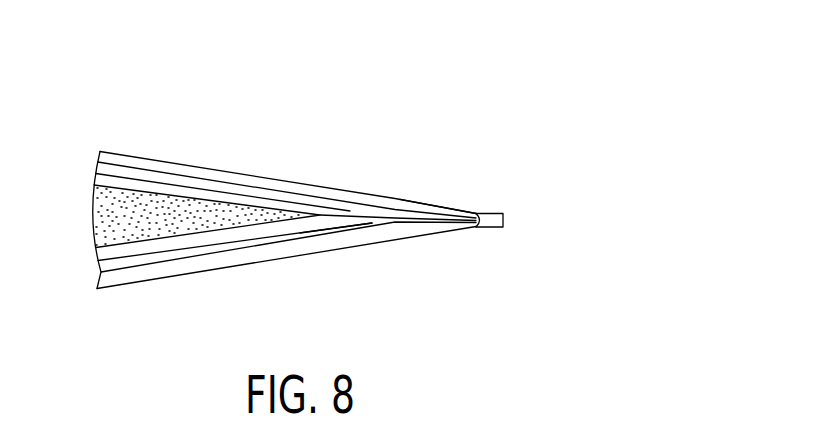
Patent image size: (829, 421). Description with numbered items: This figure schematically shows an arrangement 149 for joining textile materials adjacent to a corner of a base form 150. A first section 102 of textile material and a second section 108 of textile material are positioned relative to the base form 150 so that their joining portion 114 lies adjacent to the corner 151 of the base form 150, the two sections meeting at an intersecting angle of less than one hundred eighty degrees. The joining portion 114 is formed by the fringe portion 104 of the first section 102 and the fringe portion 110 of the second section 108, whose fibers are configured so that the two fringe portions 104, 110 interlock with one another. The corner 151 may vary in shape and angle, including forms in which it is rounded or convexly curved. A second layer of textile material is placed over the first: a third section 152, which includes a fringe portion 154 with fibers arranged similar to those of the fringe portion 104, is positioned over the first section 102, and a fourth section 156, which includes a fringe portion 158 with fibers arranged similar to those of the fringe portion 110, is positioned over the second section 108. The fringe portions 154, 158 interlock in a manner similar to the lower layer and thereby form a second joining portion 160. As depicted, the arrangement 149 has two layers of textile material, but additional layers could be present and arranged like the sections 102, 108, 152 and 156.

The arrangement 149 is at (73, 83).
The base form 150 is at (103, 212).
The corner 151 is at (318, 216).
The first section 102 is at (192, 188).
The third section 152 is at (255, 177).
The fringe portion 104 is at (352, 202).
The fringe portion 154 is at (438, 205).
The second joining portion 160 is at (474, 212).
The second section 108 is at (297, 233).
The fringe portion 110 is at (332, 240).
The joining portion 114 is at (372, 235).
The fourth section 156 is at (215, 263).
The fringe portion 158 is at (454, 233).